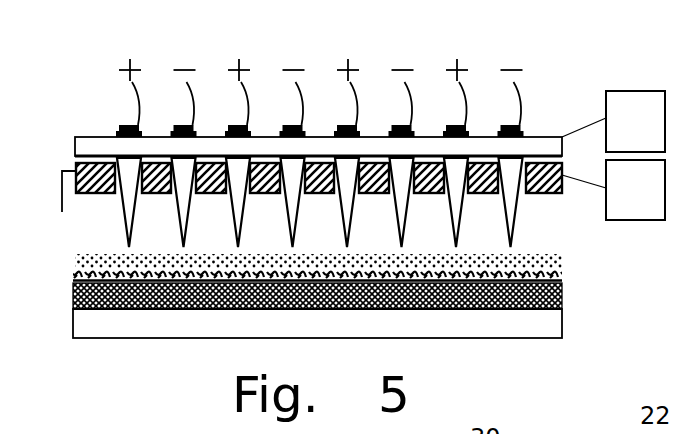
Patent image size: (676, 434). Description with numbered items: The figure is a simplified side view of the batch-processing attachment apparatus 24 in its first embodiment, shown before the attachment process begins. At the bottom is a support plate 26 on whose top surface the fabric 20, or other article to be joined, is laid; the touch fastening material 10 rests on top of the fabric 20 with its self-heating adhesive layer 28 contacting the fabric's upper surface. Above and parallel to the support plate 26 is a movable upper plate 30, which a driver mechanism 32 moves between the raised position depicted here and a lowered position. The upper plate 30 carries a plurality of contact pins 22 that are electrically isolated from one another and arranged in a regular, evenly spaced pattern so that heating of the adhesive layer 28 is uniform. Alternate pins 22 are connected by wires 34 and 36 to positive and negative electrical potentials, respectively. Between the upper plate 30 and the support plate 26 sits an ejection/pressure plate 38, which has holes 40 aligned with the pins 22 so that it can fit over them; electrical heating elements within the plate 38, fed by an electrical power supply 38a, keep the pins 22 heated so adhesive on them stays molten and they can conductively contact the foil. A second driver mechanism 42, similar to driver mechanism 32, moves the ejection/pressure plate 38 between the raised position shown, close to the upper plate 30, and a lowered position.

The touch fastening material 10 is at (364, 316).
The fabric 20 is at (205, 310).
The contact pins 22 is at (517, 212).
The apparatus 24 is at (353, 90).
The support plate 26 is at (143, 328).
The self-heating adhesive layer 28 is at (565, 281).
The movable upper plate 30 is at (258, 143).
The driver mechanism 32 is at (622, 137).
The wire 34 is at (145, 92).
The wire 36 is at (202, 92).
The ejection/pressure plate 38 is at (262, 193).
The electrical power supply 38a is at (75, 208).
The holes 40 is at (359, 188).
The driver mechanism 42 is at (622, 206).